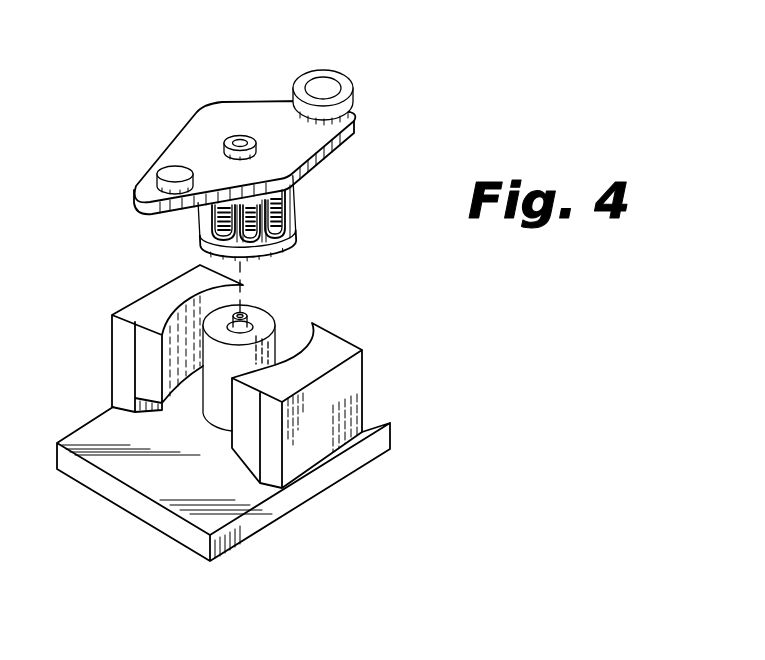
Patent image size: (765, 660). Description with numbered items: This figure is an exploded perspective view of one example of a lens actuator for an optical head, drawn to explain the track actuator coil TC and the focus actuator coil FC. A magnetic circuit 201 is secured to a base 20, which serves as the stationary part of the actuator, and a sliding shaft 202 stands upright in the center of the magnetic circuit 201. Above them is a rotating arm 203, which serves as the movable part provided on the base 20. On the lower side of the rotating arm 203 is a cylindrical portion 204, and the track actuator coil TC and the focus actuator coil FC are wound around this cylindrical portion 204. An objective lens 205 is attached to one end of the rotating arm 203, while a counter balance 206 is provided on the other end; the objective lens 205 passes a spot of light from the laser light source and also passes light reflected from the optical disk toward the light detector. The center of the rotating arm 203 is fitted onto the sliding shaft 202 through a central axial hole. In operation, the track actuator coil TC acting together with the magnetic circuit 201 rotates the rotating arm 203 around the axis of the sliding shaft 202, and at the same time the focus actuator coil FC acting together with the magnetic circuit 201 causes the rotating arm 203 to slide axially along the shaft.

The base 20 is at (339, 468).
The magnetic circuit 201 is at (326, 402).
The sliding shaft 202 is at (258, 313).
The rotating arm 203 is at (208, 122).
The cylindrical portion 204 is at (254, 229).
The objective lens 205 is at (334, 94).
The counter balance 206 is at (175, 176).
The focus actuator coil FC is at (293, 207).
The track actuator coil TC is at (203, 238).